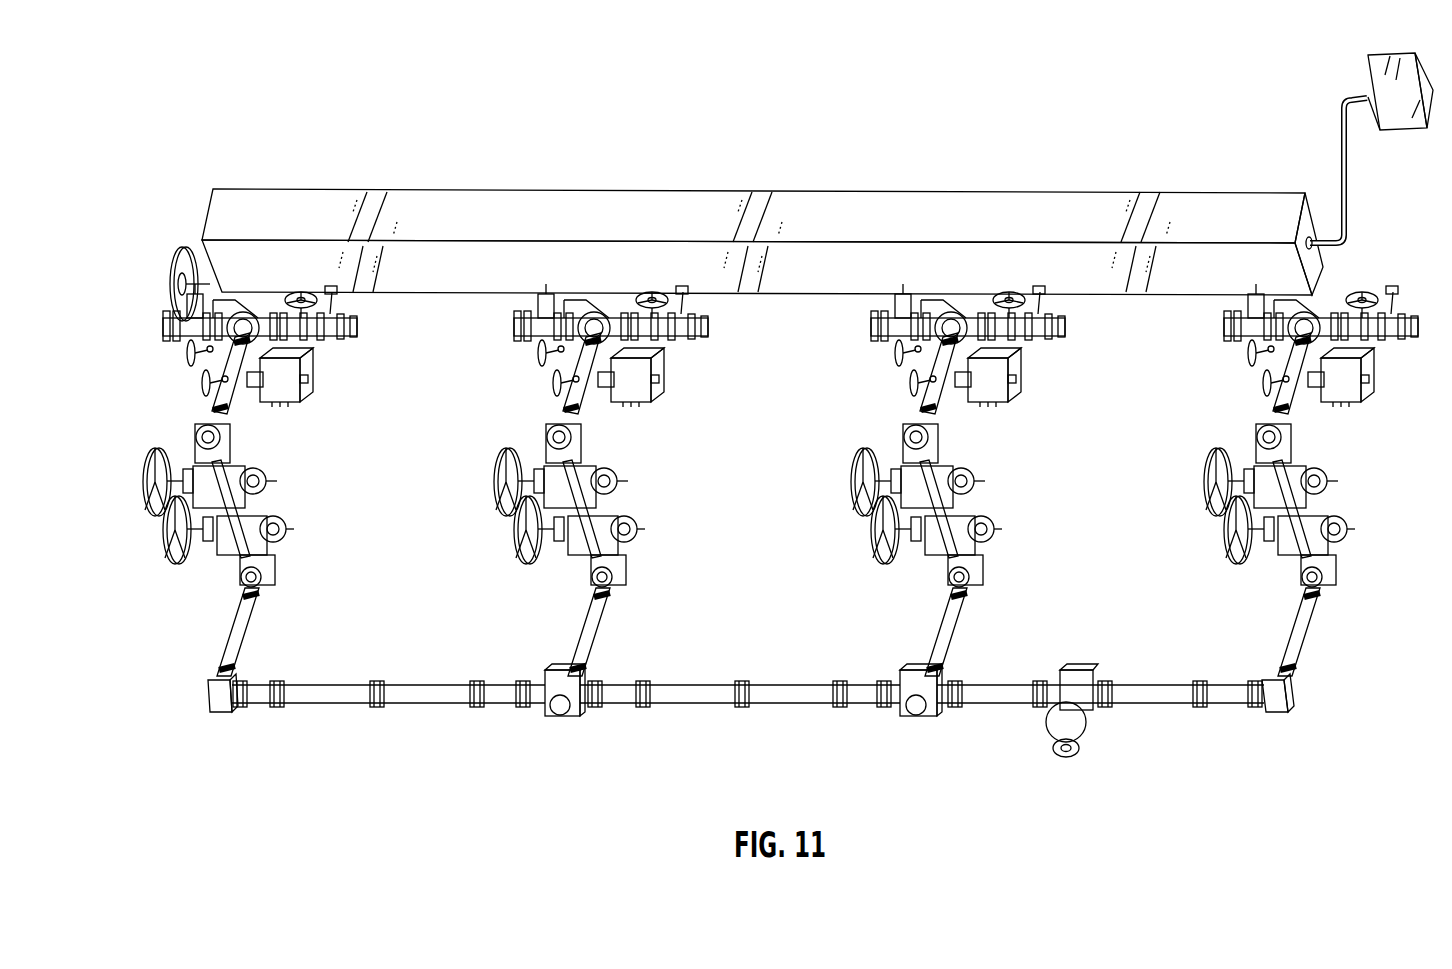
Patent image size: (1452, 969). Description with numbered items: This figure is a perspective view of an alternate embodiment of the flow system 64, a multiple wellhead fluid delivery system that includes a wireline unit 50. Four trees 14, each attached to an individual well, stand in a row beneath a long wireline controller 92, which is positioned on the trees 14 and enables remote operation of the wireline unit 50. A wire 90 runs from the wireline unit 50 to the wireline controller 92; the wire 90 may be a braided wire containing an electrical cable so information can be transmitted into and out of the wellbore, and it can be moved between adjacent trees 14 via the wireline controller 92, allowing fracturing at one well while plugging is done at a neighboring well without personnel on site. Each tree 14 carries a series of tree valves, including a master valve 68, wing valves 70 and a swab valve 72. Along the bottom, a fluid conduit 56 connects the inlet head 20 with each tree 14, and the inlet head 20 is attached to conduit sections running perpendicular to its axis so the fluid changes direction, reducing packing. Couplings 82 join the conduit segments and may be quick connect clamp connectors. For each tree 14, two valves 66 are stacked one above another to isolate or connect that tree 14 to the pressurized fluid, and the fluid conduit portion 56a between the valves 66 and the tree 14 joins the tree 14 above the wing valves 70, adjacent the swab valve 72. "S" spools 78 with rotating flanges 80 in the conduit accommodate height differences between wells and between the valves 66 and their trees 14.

The tree 14 is at (156, 264).
The inlet head 20 is at (1048, 732).
The wireline unit 50 is at (1362, 72).
The fluid conduit 56 is at (445, 704).
The fluid conduit portion 56a is at (238, 412).
The flow system 64 is at (176, 140).
The valve 66 is at (278, 484).
The master valve 68 is at (306, 398).
The wing valve 70 is at (326, 333).
The swab valve 72 is at (196, 332).
The "S" spool 78 is at (218, 356).
The rotating flange 80 is at (903, 668).
The coupling 82 is at (548, 668).
The wire 90 is at (1338, 150).
The wireline controller 92 is at (1054, 176).